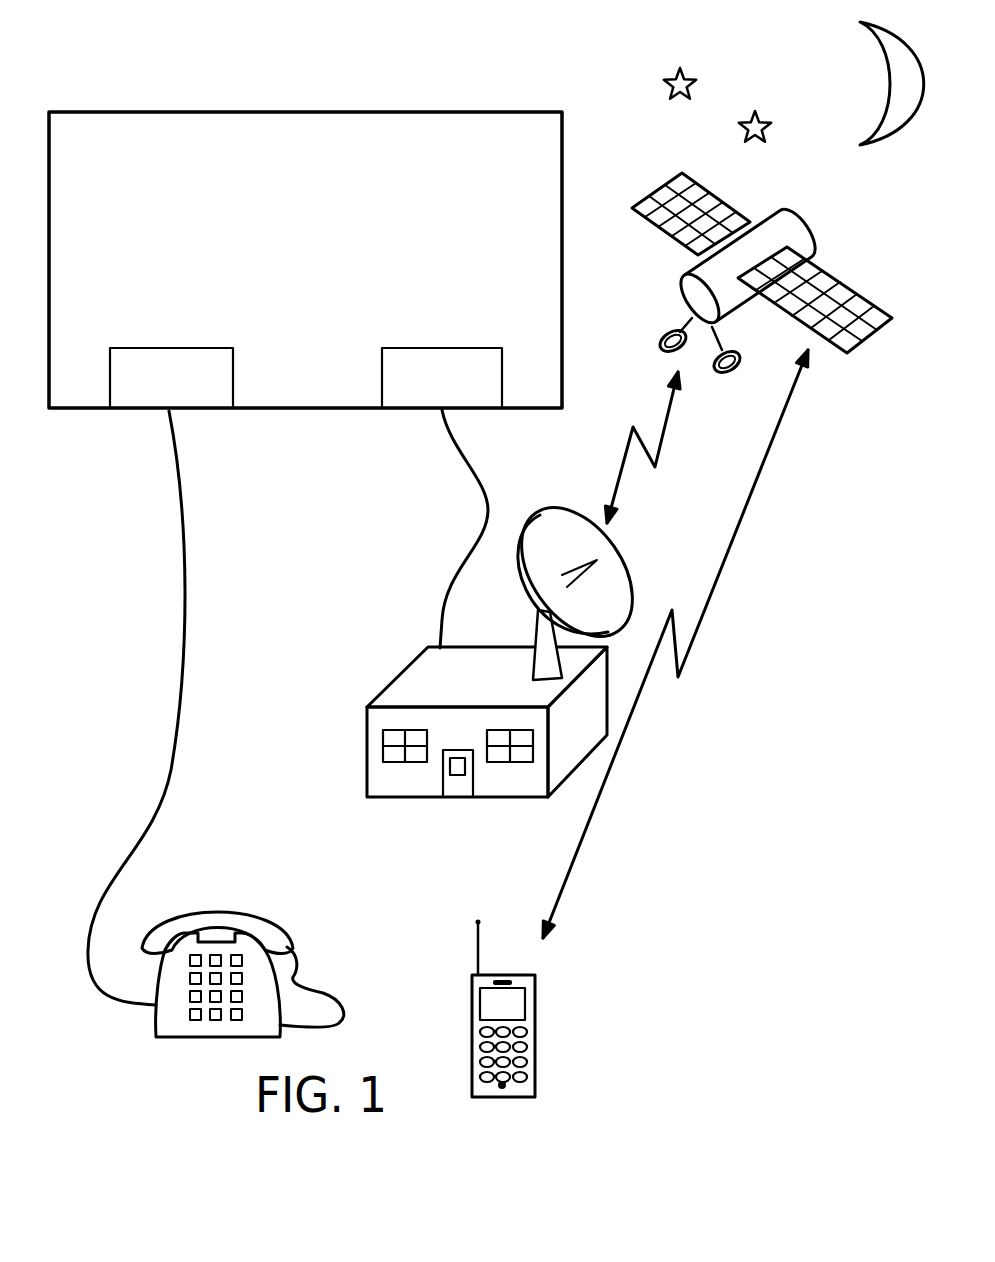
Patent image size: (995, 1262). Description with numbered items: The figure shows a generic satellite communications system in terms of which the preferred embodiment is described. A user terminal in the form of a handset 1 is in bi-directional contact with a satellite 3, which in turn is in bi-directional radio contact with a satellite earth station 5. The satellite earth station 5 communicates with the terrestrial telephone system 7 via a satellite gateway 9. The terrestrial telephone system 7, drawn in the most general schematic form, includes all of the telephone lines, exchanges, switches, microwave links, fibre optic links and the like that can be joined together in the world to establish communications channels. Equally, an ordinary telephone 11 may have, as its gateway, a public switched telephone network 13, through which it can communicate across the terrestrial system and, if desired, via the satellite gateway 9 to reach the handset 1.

The handset 1 is at (535, 1010).
The satellite 3 is at (815, 233).
The satellite earth station 5 is at (417, 797).
The terrestrial telephone system 7 is at (563, 287).
The satellite gateway 9 is at (480, 348).
The ordinary telephone 11 is at (272, 915).
The public switched telephone network 13 is at (200, 348).